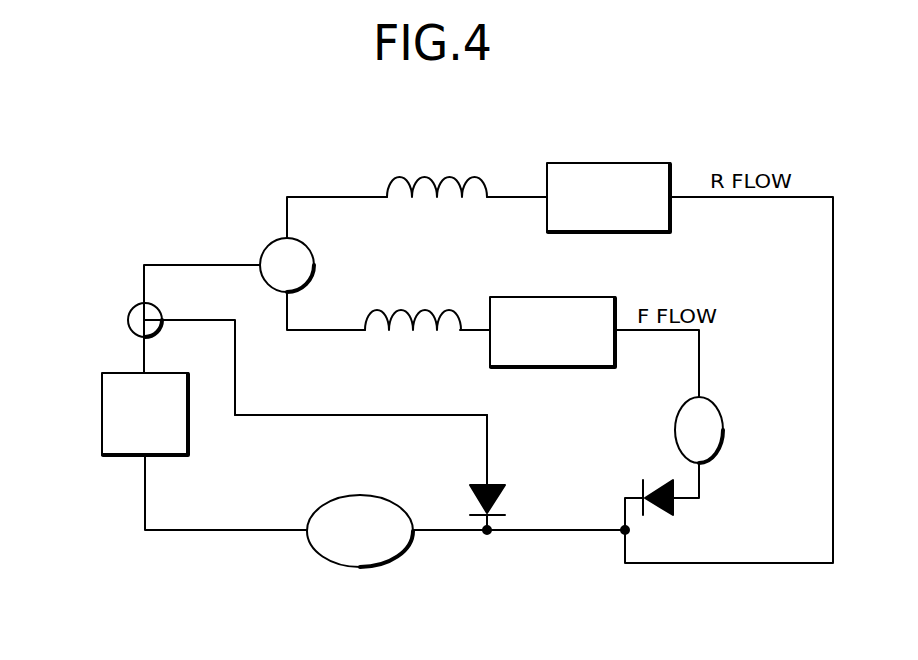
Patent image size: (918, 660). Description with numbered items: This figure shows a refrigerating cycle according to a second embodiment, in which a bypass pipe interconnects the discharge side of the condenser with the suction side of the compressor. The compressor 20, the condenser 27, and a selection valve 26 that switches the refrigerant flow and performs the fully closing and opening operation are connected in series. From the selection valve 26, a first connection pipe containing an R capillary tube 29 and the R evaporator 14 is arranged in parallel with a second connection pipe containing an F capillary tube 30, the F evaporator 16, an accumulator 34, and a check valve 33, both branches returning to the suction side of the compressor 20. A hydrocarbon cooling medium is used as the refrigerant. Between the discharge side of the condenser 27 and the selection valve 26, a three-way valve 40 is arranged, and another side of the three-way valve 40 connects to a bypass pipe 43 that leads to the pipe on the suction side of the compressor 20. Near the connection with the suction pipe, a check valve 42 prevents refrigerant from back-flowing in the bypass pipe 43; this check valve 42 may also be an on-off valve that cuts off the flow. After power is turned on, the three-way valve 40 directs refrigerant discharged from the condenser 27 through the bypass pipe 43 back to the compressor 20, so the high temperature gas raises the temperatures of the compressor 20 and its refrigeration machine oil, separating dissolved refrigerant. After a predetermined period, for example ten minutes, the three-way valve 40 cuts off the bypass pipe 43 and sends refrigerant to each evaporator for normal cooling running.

The R evaporator 14 is at (607, 163).
The F evaporator 16 is at (511, 297).
The compressor 20 is at (360, 567).
The selection valve 26 is at (266, 241).
The condenser 27 is at (100, 407).
The R capillary tube 29 is at (396, 188).
The F capillary tube 30 is at (397, 312).
The check valve 33 is at (667, 482).
The accumulator 34 is at (725, 430).
The three-way valve 40 is at (128, 318).
The check valve 42 is at (500, 500).
The bypass pipe 43 is at (487, 447).